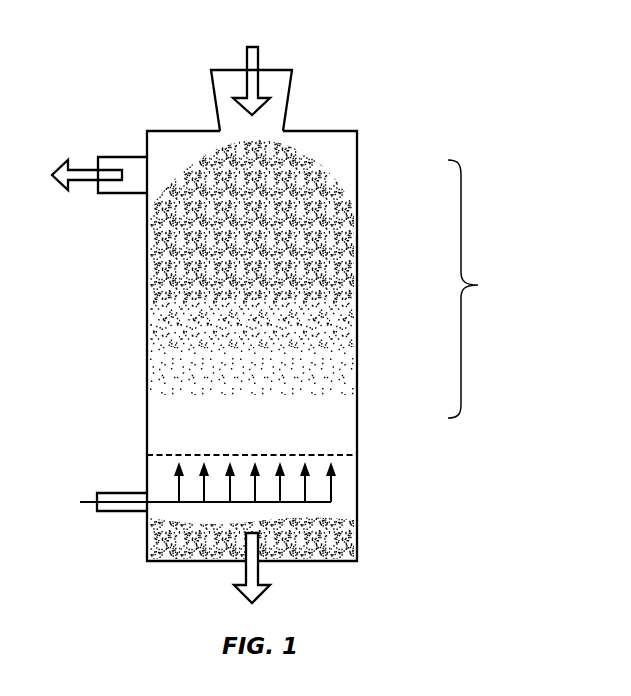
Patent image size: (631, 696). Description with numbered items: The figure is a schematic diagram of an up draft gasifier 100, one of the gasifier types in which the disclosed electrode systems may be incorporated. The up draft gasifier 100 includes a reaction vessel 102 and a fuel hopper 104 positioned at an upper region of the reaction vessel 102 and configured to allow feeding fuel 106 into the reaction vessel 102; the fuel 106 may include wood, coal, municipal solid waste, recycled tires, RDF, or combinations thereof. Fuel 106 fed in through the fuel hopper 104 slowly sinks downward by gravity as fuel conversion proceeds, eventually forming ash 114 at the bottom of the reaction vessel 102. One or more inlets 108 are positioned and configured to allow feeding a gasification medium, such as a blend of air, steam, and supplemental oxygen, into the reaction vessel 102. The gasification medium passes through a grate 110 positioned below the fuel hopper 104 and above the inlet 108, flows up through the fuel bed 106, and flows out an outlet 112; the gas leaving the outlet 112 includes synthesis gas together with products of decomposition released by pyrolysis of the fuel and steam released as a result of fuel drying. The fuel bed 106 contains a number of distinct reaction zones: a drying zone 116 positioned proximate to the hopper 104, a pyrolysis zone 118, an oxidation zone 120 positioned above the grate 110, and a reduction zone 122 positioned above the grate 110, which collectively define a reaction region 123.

The up draft gasifier 100 is at (398, 63).
The reaction vessel 102 is at (357, 165).
The fuel hopper 104 is at (278, 87).
The fuel 106 is at (250, 173).
The inlet 108 is at (89, 499).
The grate 110 is at (338, 457).
The outlet 112 is at (120, 157).
The ash 114 is at (317, 545).
The drying zone 116 is at (272, 198).
The pyrolysis zone 118 is at (267, 297).
The oxidation zone 120 is at (267, 365).
The reduction zone 122 is at (273, 405).
The reaction region 123 is at (484, 289).